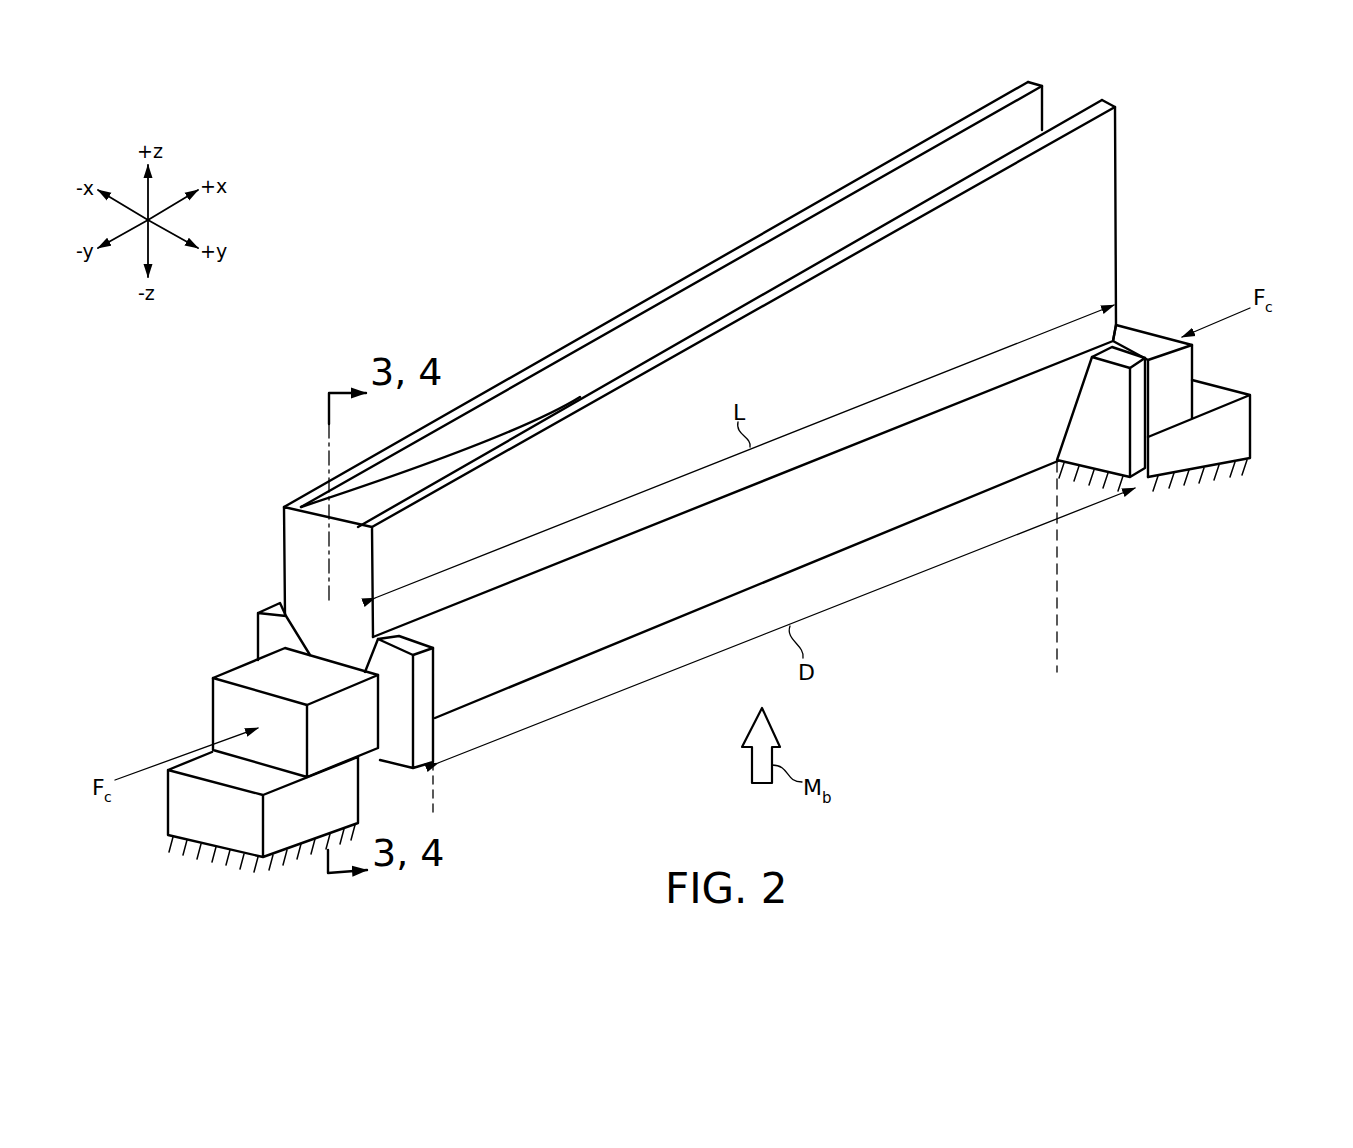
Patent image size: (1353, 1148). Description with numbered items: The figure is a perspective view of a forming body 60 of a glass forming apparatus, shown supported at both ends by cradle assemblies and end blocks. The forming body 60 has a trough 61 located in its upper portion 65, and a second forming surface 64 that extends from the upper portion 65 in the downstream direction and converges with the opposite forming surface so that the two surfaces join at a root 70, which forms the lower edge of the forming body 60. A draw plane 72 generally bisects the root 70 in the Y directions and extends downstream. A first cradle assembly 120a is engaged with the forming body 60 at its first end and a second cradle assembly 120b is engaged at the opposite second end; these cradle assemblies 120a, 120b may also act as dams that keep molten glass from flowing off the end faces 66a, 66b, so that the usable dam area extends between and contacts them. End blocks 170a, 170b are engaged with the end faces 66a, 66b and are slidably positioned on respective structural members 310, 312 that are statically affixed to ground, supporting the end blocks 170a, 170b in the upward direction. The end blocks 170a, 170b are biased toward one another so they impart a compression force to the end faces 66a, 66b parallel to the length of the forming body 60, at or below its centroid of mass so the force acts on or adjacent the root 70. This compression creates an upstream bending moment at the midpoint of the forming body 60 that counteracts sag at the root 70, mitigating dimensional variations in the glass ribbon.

The forming body 60 is at (1172, 155).
The trough 61 is at (680, 320).
The second forming surface 64 is at (832, 547).
The upper portion 65 is at (1106, 265).
The end face 66a is at (295, 560).
The end face 66b is at (1118, 228).
The root 70 is at (632, 644).
The draw plane 72 is at (1062, 625).
The first cradle assembly 120a is at (445, 738).
The second cradle assembly 120b is at (1148, 480).
The end block 170a is at (208, 712).
The end block 170b is at (1275, 330).
The structural member 310 is at (218, 853).
The structural member 312 is at (1252, 428).